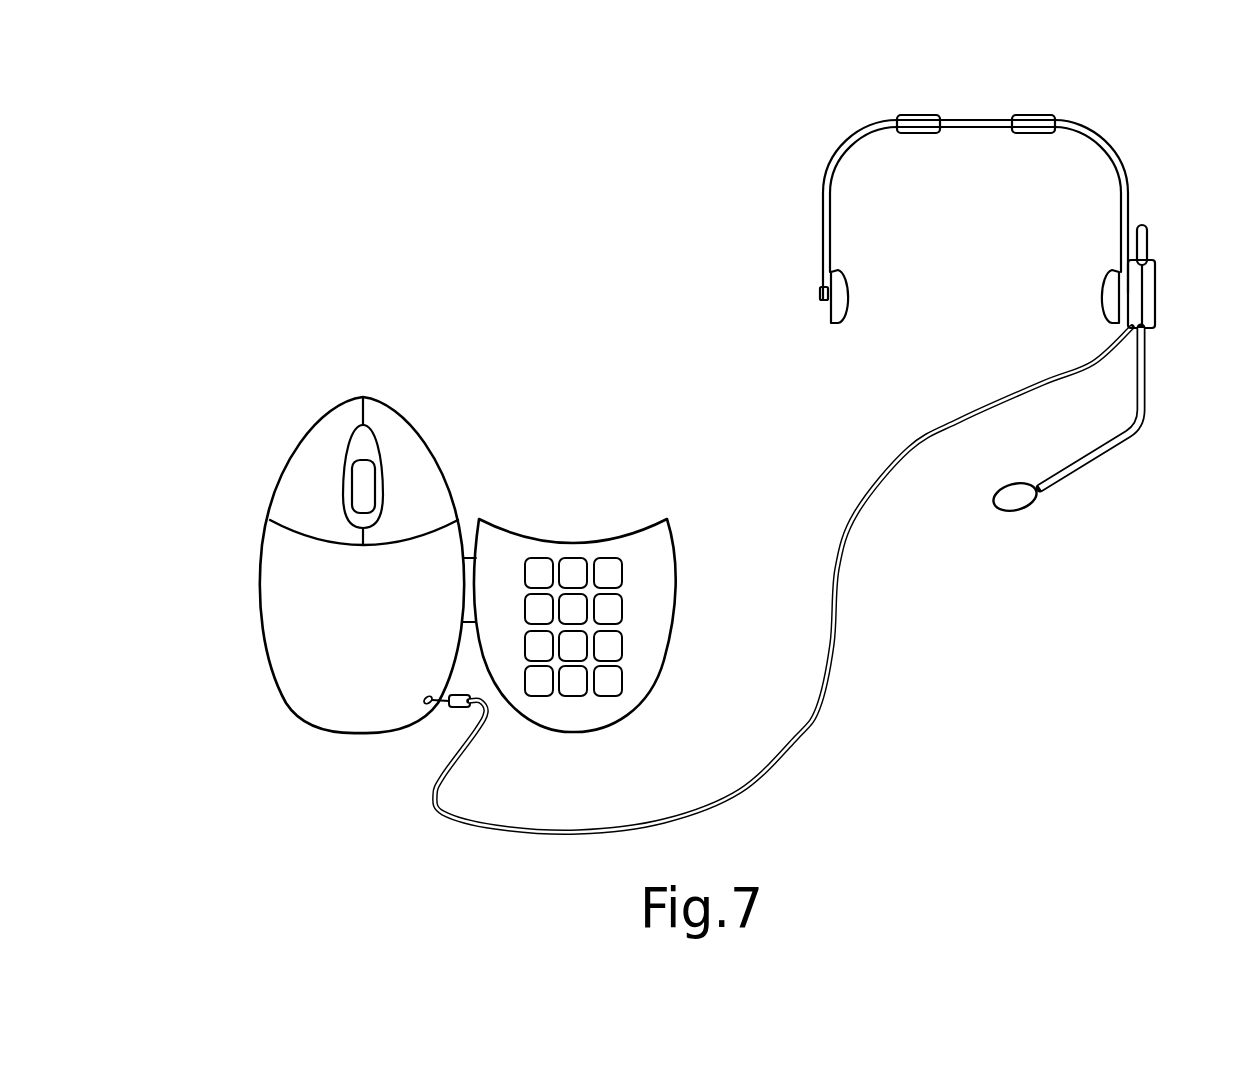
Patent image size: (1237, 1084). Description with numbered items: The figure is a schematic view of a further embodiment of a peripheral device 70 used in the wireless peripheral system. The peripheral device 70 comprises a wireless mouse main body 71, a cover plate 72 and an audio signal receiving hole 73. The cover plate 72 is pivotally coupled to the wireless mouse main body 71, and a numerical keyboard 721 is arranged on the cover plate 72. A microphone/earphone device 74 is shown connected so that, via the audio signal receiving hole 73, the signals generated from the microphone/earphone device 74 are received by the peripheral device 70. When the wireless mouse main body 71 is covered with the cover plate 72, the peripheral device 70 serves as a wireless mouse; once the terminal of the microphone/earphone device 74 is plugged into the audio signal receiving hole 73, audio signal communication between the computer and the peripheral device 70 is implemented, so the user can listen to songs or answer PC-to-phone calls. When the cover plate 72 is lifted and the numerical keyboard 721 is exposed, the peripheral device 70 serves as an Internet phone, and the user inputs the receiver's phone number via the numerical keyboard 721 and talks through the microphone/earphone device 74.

The peripheral device 70 is at (286, 738).
The wireless mouse main body 71 is at (280, 600).
The cover plate 72 is at (653, 569).
The numerical keyboard 721 is at (555, 700).
The audio signal receiving hole 73 is at (427, 705).
The microphone/earphone device 74 is at (1113, 142).